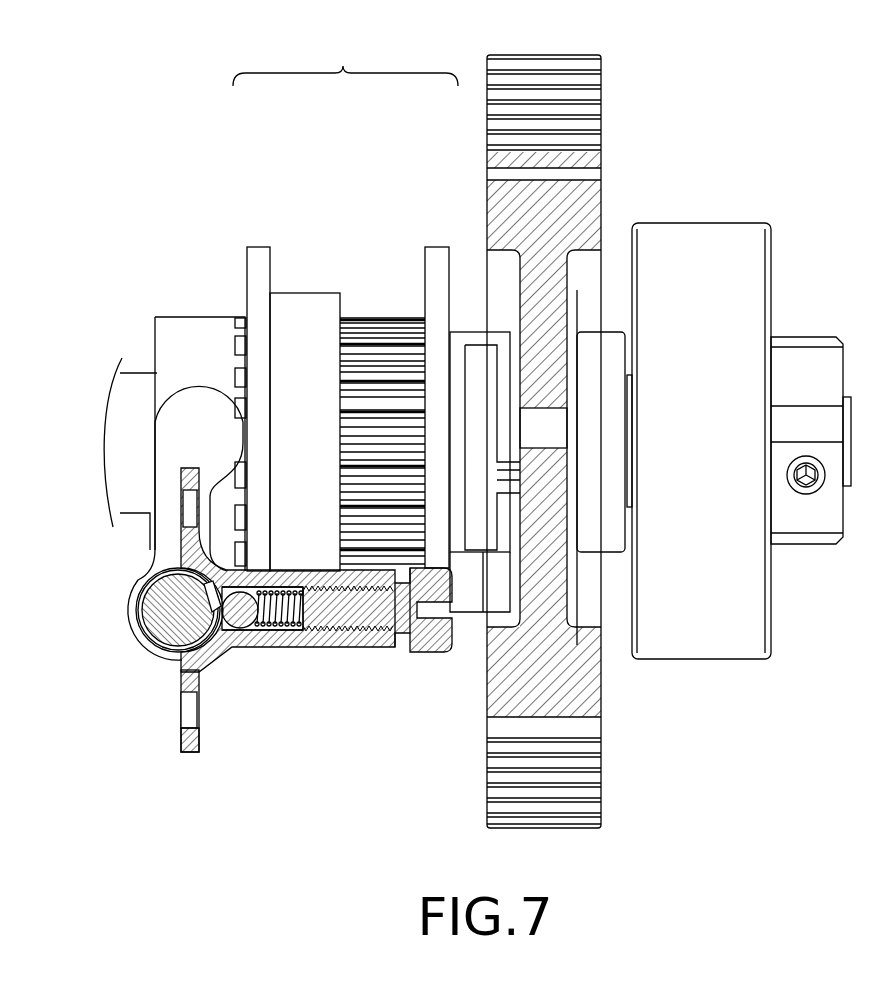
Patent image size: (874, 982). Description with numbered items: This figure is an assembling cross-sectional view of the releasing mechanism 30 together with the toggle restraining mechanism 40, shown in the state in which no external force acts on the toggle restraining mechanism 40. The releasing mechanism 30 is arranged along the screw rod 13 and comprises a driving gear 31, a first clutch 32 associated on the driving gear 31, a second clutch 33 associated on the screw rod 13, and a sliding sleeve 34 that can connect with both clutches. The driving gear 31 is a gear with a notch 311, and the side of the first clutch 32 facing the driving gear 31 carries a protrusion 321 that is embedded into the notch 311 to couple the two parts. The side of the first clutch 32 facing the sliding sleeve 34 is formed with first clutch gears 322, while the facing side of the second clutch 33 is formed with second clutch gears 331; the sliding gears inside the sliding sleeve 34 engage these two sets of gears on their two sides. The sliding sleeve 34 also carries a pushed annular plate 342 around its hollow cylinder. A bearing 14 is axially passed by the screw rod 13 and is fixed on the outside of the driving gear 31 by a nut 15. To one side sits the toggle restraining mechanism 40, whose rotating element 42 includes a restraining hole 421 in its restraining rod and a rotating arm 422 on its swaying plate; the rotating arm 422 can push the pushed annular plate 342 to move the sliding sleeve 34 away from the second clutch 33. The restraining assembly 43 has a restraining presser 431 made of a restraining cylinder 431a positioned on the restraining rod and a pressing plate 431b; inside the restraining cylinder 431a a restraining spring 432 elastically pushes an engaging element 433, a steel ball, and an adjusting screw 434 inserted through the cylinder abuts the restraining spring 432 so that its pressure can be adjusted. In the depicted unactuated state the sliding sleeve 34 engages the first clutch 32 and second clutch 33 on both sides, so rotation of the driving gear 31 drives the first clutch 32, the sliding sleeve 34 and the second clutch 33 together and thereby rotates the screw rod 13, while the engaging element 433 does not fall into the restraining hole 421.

The screw rod 13 is at (140, 382).
The bearing 14 is at (708, 237).
The nut 15 is at (810, 356).
The releasing mechanism 30 is at (345, 61).
The driving gear 31 is at (488, 207).
The notch 311 is at (483, 497).
The first clutch 32 is at (437, 258).
The protrusion 321 is at (480, 473).
The first clutch gears 322 is at (387, 345).
The second clutch 33 is at (195, 323).
The second clutch gears 331 is at (238, 323).
The sliding sleeve 34 is at (307, 303).
The pushed annular plate 342 is at (260, 408).
The toggle restraining mechanism 40 is at (133, 667).
The rotating element 42 is at (229, 529).
The restraining hole 421 is at (213, 603).
The rotating arm 422 is at (200, 428).
The restraining assembly 43 is at (281, 720).
The restraining presser 431 is at (209, 757).
The restraining cylinder 431a is at (255, 642).
The pressing plate 431b is at (182, 733).
The restraining spring 432 is at (282, 627).
The engaging element 433 is at (252, 620).
The adjusting screw 434 is at (373, 612).